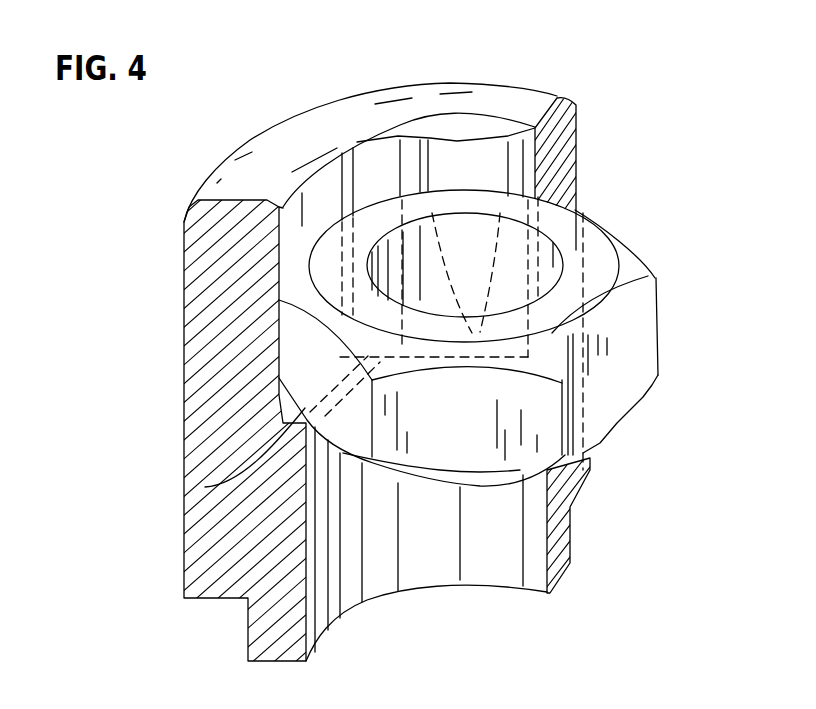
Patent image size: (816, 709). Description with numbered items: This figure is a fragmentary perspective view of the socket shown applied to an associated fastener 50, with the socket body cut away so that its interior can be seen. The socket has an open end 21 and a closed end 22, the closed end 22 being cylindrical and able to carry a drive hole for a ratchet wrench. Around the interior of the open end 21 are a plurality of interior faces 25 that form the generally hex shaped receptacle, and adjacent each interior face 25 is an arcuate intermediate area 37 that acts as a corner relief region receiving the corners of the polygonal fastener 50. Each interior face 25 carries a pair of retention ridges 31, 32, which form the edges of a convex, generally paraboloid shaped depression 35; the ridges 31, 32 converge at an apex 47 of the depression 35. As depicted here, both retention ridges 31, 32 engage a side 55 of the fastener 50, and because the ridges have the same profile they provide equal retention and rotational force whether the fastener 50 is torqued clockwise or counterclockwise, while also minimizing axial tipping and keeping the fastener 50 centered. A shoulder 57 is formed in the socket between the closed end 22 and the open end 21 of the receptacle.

The open end 21 is at (373, 150).
The closed end 22 is at (491, 570).
The interior face 25 is at (522, 176).
The retention ridge 31 is at (480, 150).
The retention ridge 32 is at (468, 333).
The depression 35 is at (452, 150).
The intermediate area 37 is at (373, 150).
The apex 47 is at (600, 293).
The fastener 50 is at (642, 410).
The side 55 is at (560, 260).
The shoulder 57 is at (205, 487).